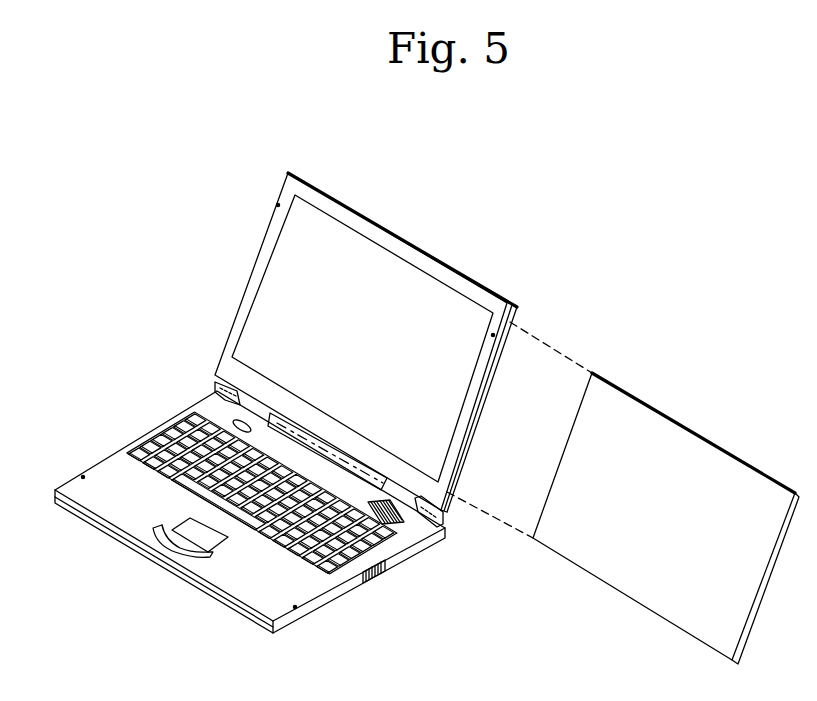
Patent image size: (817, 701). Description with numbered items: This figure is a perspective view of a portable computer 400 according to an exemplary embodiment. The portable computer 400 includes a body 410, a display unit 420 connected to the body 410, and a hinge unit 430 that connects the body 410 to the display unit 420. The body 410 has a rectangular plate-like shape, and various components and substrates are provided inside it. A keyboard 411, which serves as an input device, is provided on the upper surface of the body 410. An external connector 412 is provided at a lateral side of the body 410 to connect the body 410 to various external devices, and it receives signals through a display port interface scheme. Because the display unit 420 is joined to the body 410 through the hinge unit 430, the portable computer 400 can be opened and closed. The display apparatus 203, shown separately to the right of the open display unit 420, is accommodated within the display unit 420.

The portable computer 400 is at (810, 168).
The body 410 is at (107, 470).
The keyboard 411 is at (189, 420).
The external connector 412 is at (372, 582).
The display unit 420 is at (410, 244).
The hinge unit 430 is at (425, 528).
The display apparatus 203 is at (708, 424).